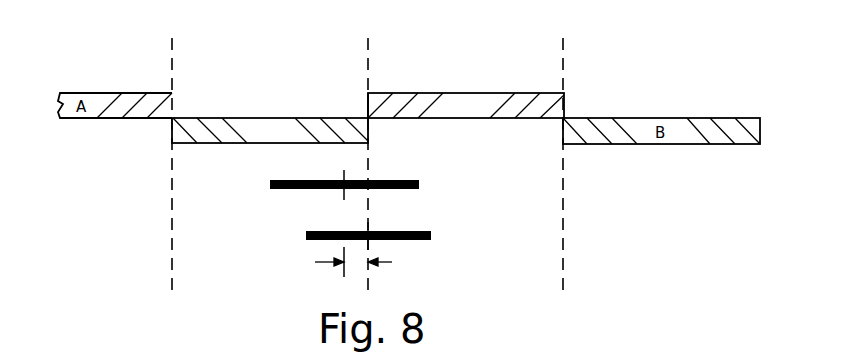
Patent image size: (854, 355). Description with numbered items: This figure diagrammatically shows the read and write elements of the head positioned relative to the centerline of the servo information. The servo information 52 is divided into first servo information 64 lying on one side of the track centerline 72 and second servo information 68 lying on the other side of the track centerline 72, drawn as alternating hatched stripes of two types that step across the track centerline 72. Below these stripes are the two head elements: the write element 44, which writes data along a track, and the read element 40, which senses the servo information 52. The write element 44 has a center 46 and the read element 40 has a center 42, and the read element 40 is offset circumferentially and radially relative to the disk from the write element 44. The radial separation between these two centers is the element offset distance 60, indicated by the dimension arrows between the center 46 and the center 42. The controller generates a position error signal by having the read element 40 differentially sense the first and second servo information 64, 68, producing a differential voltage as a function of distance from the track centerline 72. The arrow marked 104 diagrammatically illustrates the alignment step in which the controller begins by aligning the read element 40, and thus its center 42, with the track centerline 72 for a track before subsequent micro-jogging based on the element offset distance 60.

The track centerline 72 is at (370, 50).
The servo information 52 is at (383, 91).
The second servo information 68 is at (448, 92).
The first servo information 64 is at (255, 118).
The write element 44 is at (388, 180).
The center of write element 46 is at (344, 176).
The read element 40 is at (394, 230).
The center of read element 42 is at (368, 228).
The alignment of read element with track centerline 104 is at (400, 197).
The element offset distance 60 is at (388, 263).